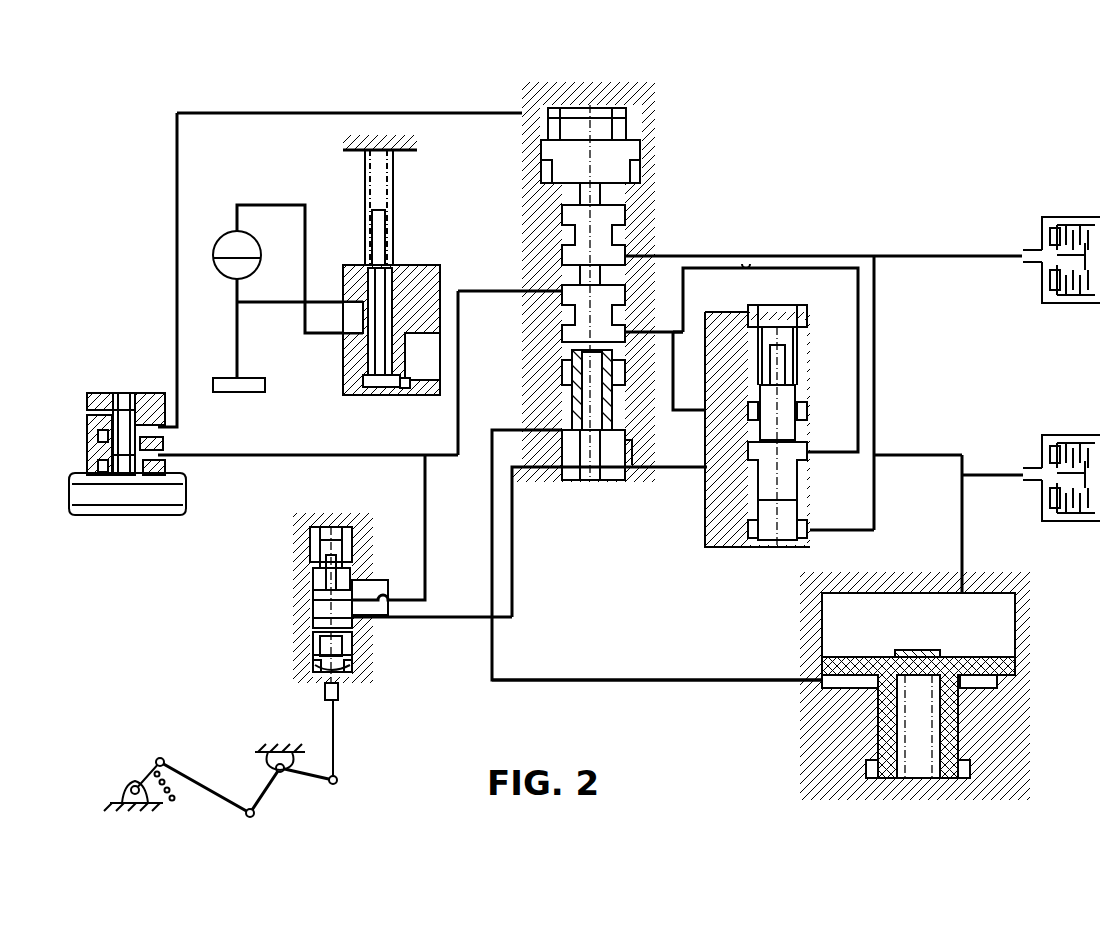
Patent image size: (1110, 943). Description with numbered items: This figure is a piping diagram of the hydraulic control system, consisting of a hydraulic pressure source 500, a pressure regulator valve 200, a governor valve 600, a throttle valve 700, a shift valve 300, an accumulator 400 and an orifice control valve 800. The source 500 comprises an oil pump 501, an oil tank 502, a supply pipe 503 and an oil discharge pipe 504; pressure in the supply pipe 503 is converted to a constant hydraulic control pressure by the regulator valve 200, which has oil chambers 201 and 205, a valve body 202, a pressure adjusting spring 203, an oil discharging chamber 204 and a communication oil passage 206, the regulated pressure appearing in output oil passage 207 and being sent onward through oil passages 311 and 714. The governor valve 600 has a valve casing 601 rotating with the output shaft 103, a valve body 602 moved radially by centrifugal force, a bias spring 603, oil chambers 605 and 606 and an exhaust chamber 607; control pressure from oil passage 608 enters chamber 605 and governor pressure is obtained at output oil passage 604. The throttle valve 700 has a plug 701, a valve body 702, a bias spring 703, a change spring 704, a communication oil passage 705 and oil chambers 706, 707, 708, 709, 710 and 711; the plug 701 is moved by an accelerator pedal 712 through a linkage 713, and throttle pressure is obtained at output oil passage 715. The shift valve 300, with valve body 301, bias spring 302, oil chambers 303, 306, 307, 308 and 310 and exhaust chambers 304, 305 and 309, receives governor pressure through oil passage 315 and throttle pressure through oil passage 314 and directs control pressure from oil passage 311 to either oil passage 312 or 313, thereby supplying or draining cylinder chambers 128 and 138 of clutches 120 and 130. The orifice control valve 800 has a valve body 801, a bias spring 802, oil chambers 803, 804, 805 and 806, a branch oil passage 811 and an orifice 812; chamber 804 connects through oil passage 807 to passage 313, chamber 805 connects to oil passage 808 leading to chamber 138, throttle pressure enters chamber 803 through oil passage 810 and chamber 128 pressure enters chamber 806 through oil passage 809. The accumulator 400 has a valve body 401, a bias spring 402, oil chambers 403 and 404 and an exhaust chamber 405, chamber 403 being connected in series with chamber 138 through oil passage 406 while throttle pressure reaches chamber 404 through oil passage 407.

The output shaft 103 is at (118, 505).
The clutch 120 is at (1039, 238).
The cylinder chamber 128 is at (1063, 199).
The clutch 130 is at (1031, 458).
The cylinder chamber 138 is at (1081, 421).
The pressure regulator valve 200 is at (412, 295).
The oil chamber 201 is at (400, 330).
The valve body 202 is at (396, 272).
The pressure adjusting spring 203 is at (390, 174).
The oil discharging chamber 204 is at (396, 298).
The oil chamber 205 is at (372, 390).
The communication oil passage 206 is at (410, 385).
The output oil passage 207 is at (458, 335).
The shift valve 300 is at (599, 381).
The valve body 301 is at (640, 145).
The bias spring 302 is at (572, 448).
The oil chamber 303 is at (636, 122).
The exhaust chamber 304 is at (640, 178).
The exhaust chamber 305 is at (625, 218).
The oil chamber 306 is at (562, 254).
The oil chamber 307 is at (632, 326).
The oil chamber 308 is at (562, 338).
The exhaust chamber 309 is at (562, 382).
The oil chamber 310 is at (625, 445).
The oil passage 311 is at (536, 292).
The oil passage 312 is at (792, 255).
The oil passage 313 is at (675, 268).
The oil passage 314 is at (520, 424).
The oil passage 315 is at (450, 128).
The accumulator 400 is at (763, 632).
The valve body 401 is at (980, 688).
The bias spring 402 is at (925, 780).
The oil chamber 403 is at (935, 570).
The oil chamber 404 is at (842, 688).
The exhaust chamber 405 is at (970, 768).
The oil passage 406 is at (963, 515).
The oil passage 407 is at (726, 680).
The hydraulic pressure source 500 is at (282, 279).
The oil pump 501 is at (246, 280).
The oil tank 502 is at (248, 380).
The supply pipe 503 is at (272, 205).
The oil discharge pipe 504 is at (300, 315).
The governor valve 600 is at (243, 330).
The valve casing 601 is at (150, 393).
The valve body 602 is at (120, 395).
The bias spring 603 is at (163, 440).
The output oil passage 604 is at (172, 328).
The oil chamber 605 is at (98, 464).
The oil chamber 606 is at (98, 435).
The exhaust chamber 607 is at (88, 404).
The oil passage 608 is at (312, 455).
The throttle valve 700 is at (300, 636).
The plug 701 is at (338, 703).
The valve body 702 is at (345, 556).
The bias spring 703 is at (348, 527).
The change spring 704 is at (352, 663).
The communication oil passage 705 is at (352, 585).
The oil chamber 706 is at (312, 540).
The oil chamber 707 is at (313, 575).
The spool land 708 is at (313, 600).
The spool land 709 is at (313, 636).
The spool land 710 is at (313, 648).
The oil chamber 711 is at (313, 672).
The accelerator pedal 712 is at (146, 770).
The linkage 713 is at (258, 795).
The oil passage 714 is at (426, 525).
The output oil passage 715 is at (418, 617).
The orifice control valve 800 is at (737, 436).
The valve body 801 is at (806, 412).
The bias spring 802 is at (762, 345).
The oil chamber 803 is at (805, 325).
The oil chamber 804 is at (796, 392).
The oil chamber 805 is at (800, 468).
The oil chamber 806 is at (805, 540).
The oil passage 807 is at (740, 412).
The oil passage 808 is at (902, 458).
The oil passage 809 is at (860, 528).
The oil passage 810 is at (608, 468).
The branch oil passage 811 is at (876, 292).
The orifice 812 is at (748, 268).